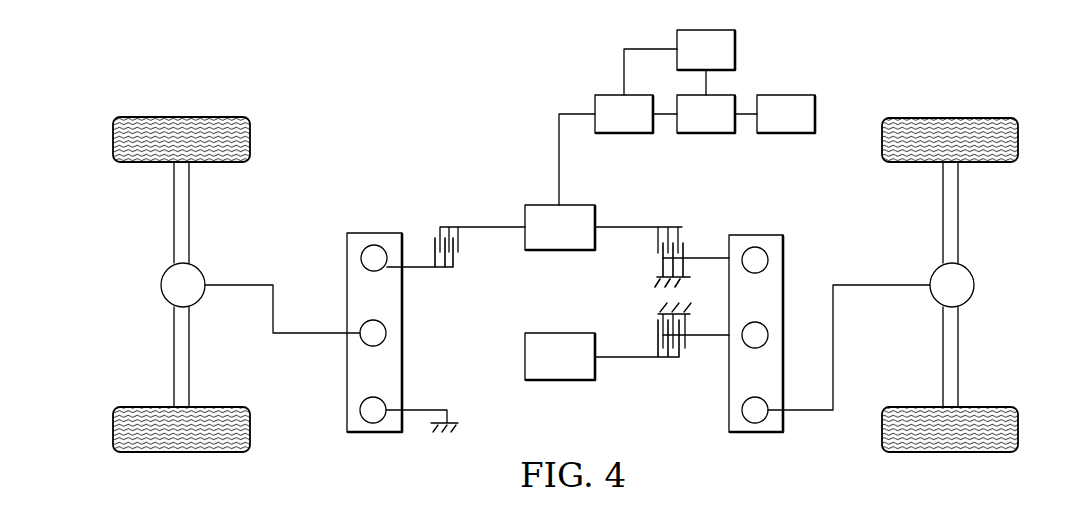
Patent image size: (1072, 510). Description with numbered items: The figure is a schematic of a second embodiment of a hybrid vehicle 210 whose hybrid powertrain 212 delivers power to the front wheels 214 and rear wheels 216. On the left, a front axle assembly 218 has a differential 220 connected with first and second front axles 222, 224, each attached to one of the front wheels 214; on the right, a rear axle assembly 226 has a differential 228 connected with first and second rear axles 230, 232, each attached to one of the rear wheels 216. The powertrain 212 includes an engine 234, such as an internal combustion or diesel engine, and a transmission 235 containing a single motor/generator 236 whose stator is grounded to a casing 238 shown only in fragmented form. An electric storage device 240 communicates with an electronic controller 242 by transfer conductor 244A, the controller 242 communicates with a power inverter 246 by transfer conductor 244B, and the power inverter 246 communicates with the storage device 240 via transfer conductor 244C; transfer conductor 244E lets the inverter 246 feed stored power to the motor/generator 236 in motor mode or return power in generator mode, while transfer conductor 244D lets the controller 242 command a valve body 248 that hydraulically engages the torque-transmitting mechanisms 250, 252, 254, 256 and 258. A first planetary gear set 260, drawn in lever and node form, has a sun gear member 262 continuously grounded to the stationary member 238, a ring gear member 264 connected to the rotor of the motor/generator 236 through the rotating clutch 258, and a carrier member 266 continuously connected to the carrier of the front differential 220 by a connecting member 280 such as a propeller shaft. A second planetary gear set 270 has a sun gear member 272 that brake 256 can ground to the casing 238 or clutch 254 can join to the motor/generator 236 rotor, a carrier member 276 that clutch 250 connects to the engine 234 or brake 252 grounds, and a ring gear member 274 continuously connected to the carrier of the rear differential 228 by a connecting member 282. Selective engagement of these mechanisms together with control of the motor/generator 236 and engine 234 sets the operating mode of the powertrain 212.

The hybrid vehicle 210 is at (260, 68).
The hybrid powertrain 212 is at (326, 150).
The front wheels 214 is at (178, 118).
The rear wheels 216 is at (950, 118).
The front axle assembly 218 is at (228, 216).
The differential 220 is at (183, 285).
The first front axle 222 is at (173, 355).
The second front axle 224 is at (173, 213).
The rear axle assembly 226 is at (926, 250).
The differential 228 is at (952, 285).
The first rear axle 230 is at (960, 357).
The second rear axle 232 is at (960, 213).
The engine 234 is at (560, 356).
The transmission 235 is at (506, 160).
The motor/generator 236 is at (560, 227).
The casing 238 is at (456, 427).
The electric storage device 240 is at (706, 50).
The electronic controller 242 is at (706, 114).
The transfer conductor 244A is at (707, 82).
The transfer conductor 244B is at (666, 116).
The transfer conductor 244C is at (650, 48).
The transfer conductor 244D is at (746, 116).
The transfer conductor 244E is at (557, 162).
The power inverter 246 is at (624, 114).
The valve body 248 is at (786, 114).
The torque-transmitting mechanism 250 is at (683, 368).
The torque-transmitting mechanism 252 is at (646, 327).
The torque-transmitting mechanism 254 is at (690, 226).
The torque-transmitting mechanism 256 is at (646, 275).
The torque-transmitting mechanism 258 is at (428, 233).
The first planetary gear set 260 is at (346, 422).
The sun gear member 262 is at (373, 423).
The ring gear member 264 is at (361, 252).
The carrier member 266 is at (388, 335).
The second planetary gear set 270 is at (728, 398).
The sun gear member 272 is at (760, 248).
The ring gear member 274 is at (760, 398).
The carrier member 276 is at (760, 323).
The connecting member 280 is at (240, 284).
The connecting member 282 is at (800, 411).